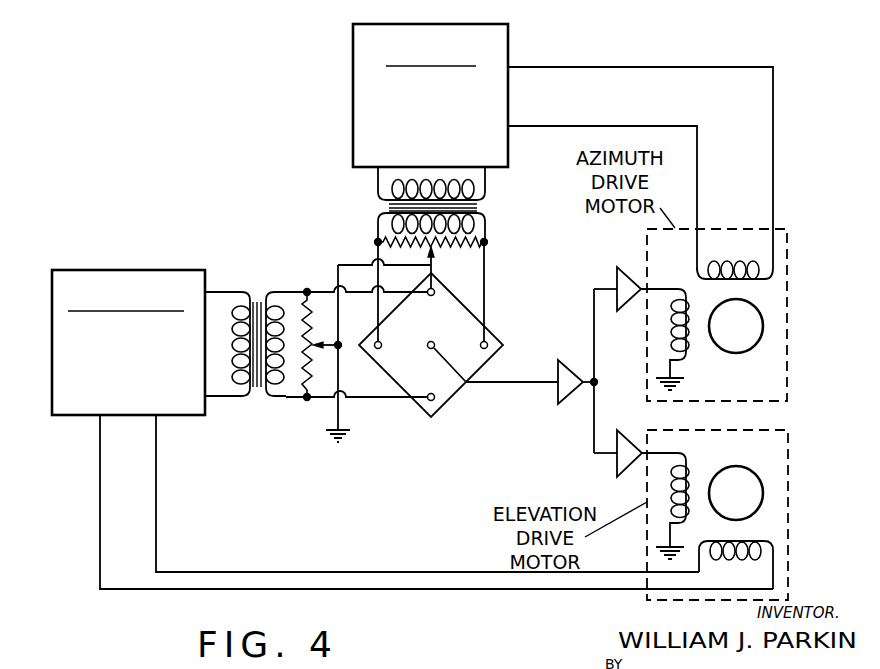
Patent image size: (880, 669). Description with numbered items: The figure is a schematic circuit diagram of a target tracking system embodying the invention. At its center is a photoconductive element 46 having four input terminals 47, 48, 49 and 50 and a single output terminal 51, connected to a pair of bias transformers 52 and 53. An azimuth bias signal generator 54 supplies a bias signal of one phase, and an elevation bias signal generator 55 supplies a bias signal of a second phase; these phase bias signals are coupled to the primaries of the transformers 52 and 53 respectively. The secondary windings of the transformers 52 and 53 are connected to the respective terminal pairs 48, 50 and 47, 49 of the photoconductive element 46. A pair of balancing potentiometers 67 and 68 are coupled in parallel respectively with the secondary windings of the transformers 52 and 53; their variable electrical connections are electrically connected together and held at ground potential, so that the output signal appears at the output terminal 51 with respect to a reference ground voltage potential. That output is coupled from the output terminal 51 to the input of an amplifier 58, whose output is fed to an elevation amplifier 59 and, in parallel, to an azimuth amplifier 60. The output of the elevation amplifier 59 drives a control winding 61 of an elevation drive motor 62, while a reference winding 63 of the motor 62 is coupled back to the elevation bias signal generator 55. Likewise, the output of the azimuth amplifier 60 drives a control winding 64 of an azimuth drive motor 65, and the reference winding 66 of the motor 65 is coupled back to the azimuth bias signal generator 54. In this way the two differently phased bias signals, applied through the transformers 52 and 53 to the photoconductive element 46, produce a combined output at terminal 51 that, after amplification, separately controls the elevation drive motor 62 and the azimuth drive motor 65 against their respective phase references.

The photoconductive element 46 is at (452, 306).
The input terminal 47 is at (436, 289).
The input terminal 48 is at (487, 342).
The input terminal 49 is at (433, 415).
The input terminal 50 is at (376, 349).
The output terminal 51 is at (428, 341).
The bias transformer 52 is at (478, 204).
The bias transformer 53 is at (254, 294).
The azimuth bias signal generator 54 is at (511, 35).
The elevation bias signal generator 55 is at (173, 271).
The amplifier 58 is at (562, 359).
The elevation amplifier 59 is at (622, 430).
The azimuth amplifier 60 is at (621, 267).
The control winding 61 is at (692, 461).
The elevation drive motor 62 is at (759, 492).
The reference winding 63 is at (774, 544).
The control winding 64 is at (672, 338).
The azimuth drive motor 65 is at (762, 327).
The reference winding 66 is at (775, 268).
The balancing potentiometer 67 is at (390, 239).
The balancing potentiometer 68 is at (305, 369).